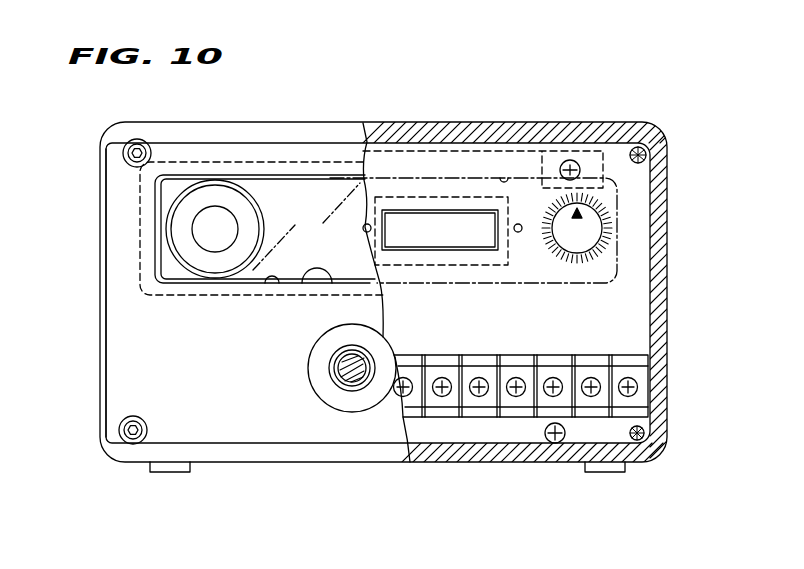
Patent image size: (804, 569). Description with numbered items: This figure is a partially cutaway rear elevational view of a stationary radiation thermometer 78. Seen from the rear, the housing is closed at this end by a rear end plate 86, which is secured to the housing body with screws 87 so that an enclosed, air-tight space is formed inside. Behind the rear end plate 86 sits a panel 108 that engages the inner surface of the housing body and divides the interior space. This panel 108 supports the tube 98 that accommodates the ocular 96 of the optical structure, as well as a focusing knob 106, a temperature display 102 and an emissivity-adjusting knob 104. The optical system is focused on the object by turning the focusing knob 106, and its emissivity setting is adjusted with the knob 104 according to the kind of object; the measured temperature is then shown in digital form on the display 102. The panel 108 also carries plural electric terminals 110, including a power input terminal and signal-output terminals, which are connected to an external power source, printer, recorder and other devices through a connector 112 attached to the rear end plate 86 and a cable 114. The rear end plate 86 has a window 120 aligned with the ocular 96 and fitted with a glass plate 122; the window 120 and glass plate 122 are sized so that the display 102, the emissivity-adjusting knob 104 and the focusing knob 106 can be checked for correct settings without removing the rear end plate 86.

The radiation thermometer of stationary type 78 is at (626, 100).
The rear end plate 86 is at (108, 368).
The screws 87 is at (122, 156).
The ocular 96 is at (215, 243).
The tube accommodating the ocular 98 is at (183, 258).
The temperature display 102 is at (447, 233).
The emissivity-adjusting knob 104 is at (578, 243).
The focusing knob 106 is at (318, 272).
The panel 108 is at (640, 298).
The electric terminals 110 is at (517, 362).
The connector 112 is at (322, 410).
The cable 114 is at (330, 363).
The window 120 is at (277, 283).
The glass plate 122 is at (282, 187).